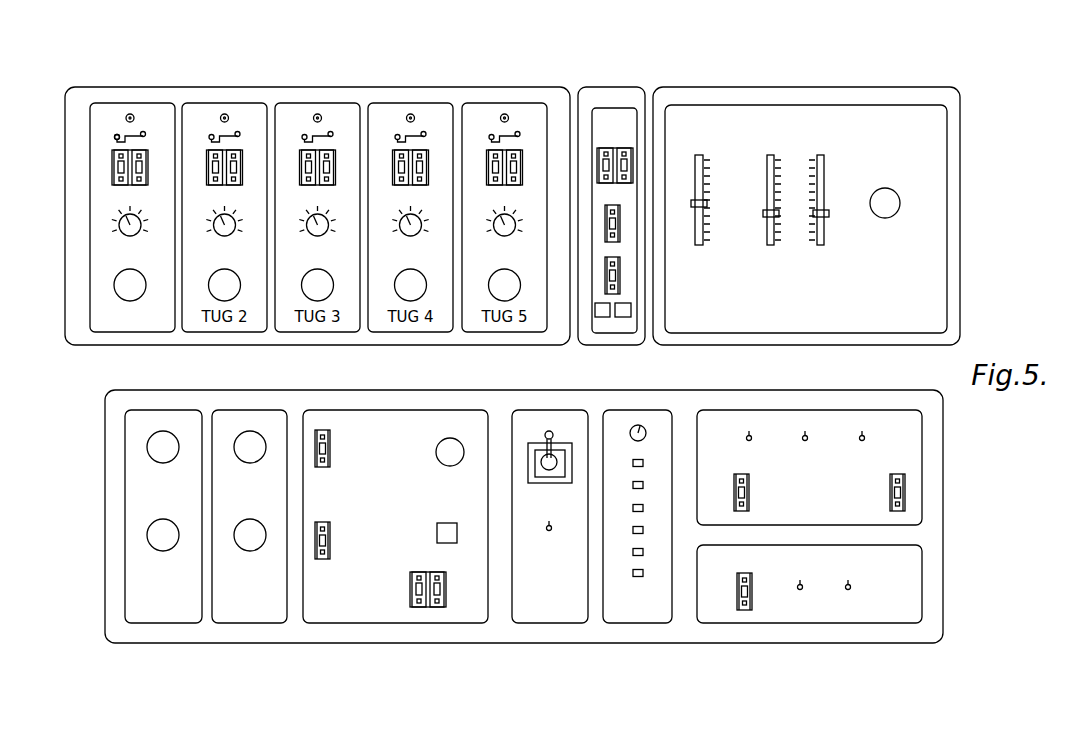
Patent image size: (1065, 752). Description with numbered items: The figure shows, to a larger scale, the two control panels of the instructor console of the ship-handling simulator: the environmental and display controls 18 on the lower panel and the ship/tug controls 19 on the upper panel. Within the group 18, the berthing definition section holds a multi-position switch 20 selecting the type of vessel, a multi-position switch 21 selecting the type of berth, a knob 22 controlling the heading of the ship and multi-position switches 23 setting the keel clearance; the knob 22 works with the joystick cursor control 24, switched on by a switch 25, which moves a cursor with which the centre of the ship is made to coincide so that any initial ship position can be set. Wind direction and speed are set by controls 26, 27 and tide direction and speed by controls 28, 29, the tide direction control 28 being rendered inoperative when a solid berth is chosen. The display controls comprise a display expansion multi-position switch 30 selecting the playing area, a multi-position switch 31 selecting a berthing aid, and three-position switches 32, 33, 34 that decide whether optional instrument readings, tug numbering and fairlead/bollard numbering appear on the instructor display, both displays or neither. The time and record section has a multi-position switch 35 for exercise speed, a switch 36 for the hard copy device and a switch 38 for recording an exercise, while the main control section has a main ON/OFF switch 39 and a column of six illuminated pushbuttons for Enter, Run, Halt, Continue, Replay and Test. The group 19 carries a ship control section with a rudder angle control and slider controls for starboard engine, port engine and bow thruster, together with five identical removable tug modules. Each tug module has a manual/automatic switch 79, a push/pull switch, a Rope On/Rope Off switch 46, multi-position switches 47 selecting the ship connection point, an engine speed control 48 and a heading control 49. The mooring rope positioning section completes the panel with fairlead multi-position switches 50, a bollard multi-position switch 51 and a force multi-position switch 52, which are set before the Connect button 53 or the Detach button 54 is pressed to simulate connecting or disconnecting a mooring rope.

The environmental controls group 18 is at (947, 500).
The ship/tug control group 19 is at (964, 247).
The multi-position switch 20 is at (331, 452).
The multi-position switch 21 is at (324, 558).
The knob 22 is at (436, 452).
The multi-position switches 23 is at (410, 588).
The joystick cursor control 24 is at (541, 455).
The switch 25 is at (545, 528).
The wind direction control 26 is at (251, 440).
The wind speed control 27 is at (253, 541).
The tide direction control 28 is at (148, 447).
The tide speed control 29 is at (148, 535).
The display expansion multi-position switch 30 is at (891, 492).
The multi-position switch 31 is at (750, 493).
The three-position switch 32 is at (748, 431).
The three-position switch 33 is at (805, 431).
The three-position switch 34 is at (861, 431).
The multi-position switch 35 is at (745, 611).
The switch 36 is at (801, 590).
The switch 38 is at (848, 590).
The main ON/OFF switch 39 is at (641, 428).
The Rope On/Rope Off switch 46 is at (146, 132).
The multi-position switches 47 is at (112, 170).
The engine speed control 48 is at (120, 231).
The heading control 49 is at (116, 287).
The Fairlead multi-position switches 50 is at (607, 148).
The Bollard multi-position switch 51 is at (621, 213).
The Force multi-position switch 52 is at (621, 272).
The Connect button 53 is at (606, 318).
The Detach button 54 is at (632, 310).
The manual/automatic switch 79 is at (128, 114).